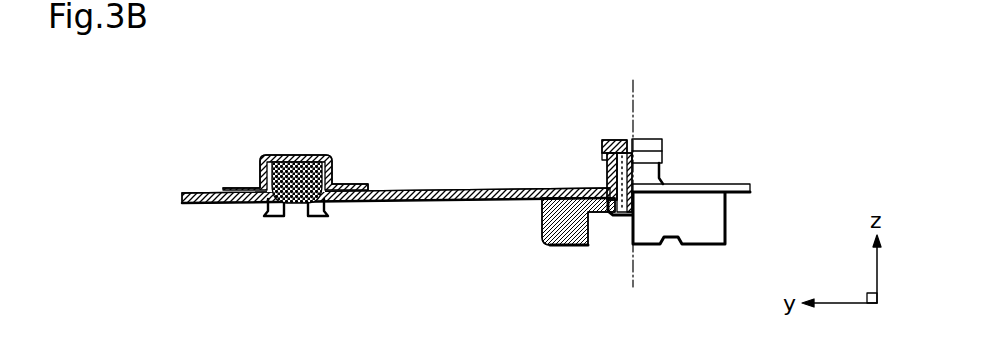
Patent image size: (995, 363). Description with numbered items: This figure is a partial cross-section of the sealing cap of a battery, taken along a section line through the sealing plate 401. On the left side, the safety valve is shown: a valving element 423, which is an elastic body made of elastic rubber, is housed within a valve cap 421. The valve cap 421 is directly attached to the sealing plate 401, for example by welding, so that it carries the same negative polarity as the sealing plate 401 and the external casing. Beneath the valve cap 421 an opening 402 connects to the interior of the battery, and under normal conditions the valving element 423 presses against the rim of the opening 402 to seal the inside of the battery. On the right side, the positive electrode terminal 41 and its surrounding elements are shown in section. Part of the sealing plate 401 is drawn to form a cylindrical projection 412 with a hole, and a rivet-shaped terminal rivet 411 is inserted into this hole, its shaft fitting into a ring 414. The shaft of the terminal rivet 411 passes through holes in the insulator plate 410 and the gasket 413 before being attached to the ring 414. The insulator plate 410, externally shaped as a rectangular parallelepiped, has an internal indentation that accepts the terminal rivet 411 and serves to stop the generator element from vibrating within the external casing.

The positive electrode terminal 41 is at (702, 146).
The sealing plate 401 is at (748, 186).
The opening 402 is at (310, 222).
The insulator plate 410 is at (703, 218).
The terminal rivet 411 is at (623, 139).
The cylindrical projection 412 is at (660, 172).
The gasket 413 is at (601, 160).
The ring 414 is at (648, 138).
The valve cap 421 is at (260, 157).
The valving element 423 is at (317, 155).